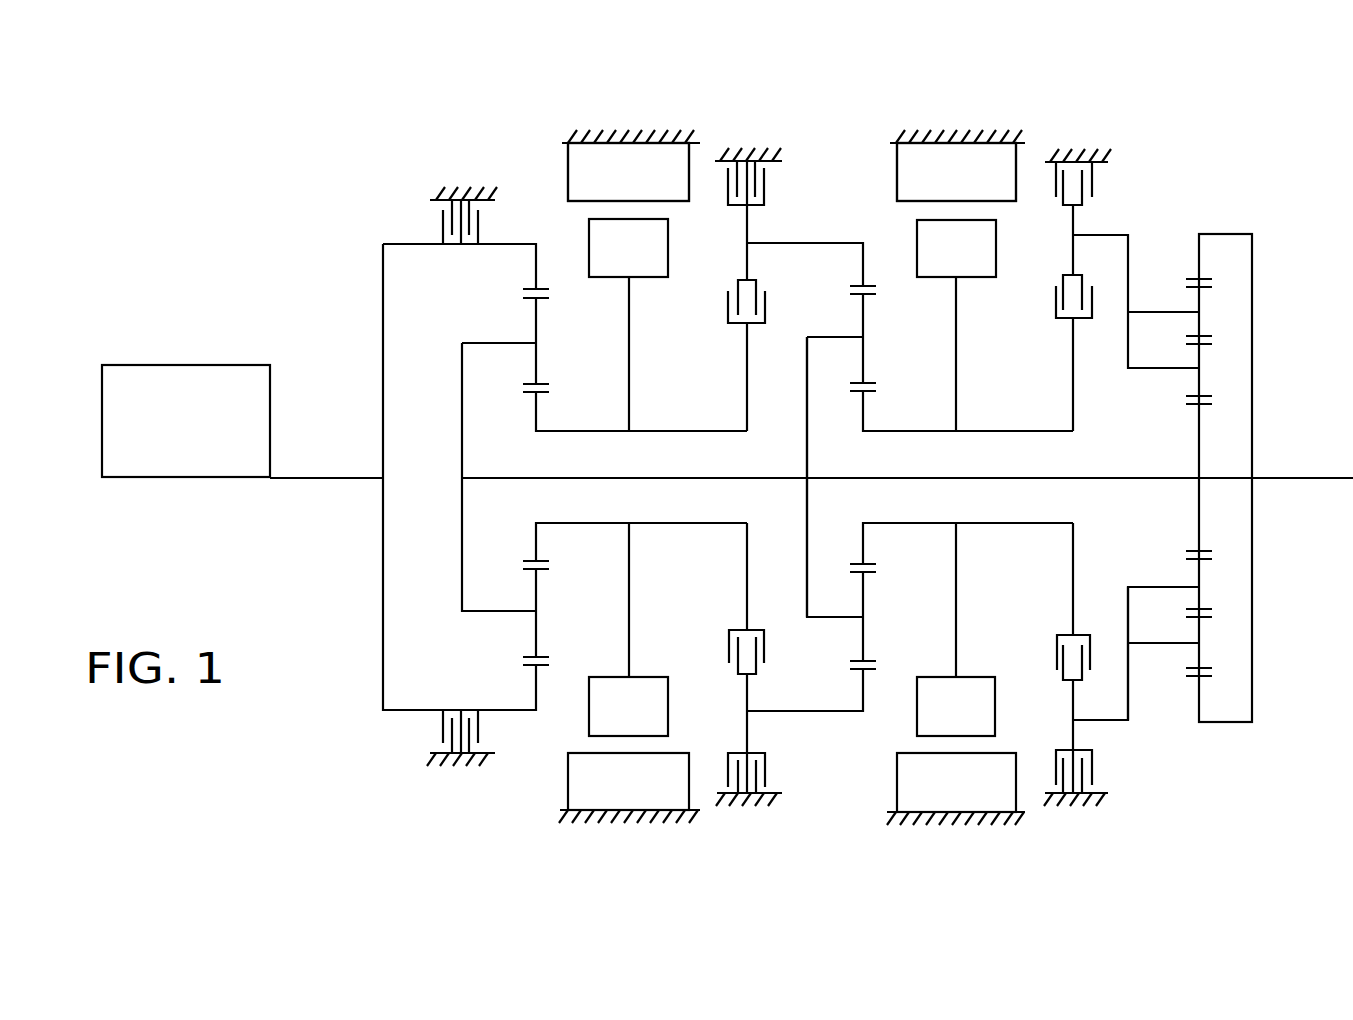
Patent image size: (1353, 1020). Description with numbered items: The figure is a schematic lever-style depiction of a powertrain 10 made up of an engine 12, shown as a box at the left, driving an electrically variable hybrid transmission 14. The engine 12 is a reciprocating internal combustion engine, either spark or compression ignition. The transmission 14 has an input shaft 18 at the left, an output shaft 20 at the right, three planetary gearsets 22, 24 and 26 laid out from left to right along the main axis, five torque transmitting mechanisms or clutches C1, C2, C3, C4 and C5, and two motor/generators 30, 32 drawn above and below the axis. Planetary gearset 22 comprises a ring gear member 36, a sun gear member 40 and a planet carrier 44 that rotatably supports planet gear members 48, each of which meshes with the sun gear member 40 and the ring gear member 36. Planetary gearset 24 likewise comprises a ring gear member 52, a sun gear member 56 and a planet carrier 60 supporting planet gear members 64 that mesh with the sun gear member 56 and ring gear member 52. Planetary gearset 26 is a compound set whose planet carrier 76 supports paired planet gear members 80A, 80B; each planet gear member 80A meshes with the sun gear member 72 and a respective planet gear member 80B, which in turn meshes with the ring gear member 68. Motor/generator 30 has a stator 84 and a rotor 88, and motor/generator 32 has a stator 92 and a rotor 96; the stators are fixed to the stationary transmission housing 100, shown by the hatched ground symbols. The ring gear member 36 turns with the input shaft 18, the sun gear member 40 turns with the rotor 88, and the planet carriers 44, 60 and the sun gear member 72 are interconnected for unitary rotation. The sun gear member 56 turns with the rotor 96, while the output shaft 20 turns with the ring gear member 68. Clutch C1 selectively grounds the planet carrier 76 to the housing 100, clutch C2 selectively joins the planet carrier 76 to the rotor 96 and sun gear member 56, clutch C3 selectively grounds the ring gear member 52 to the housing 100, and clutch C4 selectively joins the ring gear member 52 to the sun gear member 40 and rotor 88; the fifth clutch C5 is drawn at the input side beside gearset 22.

The powertrain 10 is at (178, 228).
The engine 12 is at (193, 365).
The electrically variable hybrid transmission 14 is at (310, 182).
The input shaft 18 is at (345, 477).
The output shaft 20 is at (1312, 477).
The planetary gearset 22 is at (537, 222).
The planetary gearset 24 is at (862, 222).
The planetary gearset 26 is at (1228, 228).
The motor/generator 30 is at (605, 172).
The motor/generator 32 is at (933, 172).
The ring gear member 36 is at (525, 286).
The sun gear member 40 is at (541, 395).
The planet carrier 44 is at (460, 431).
The planet gear members 48 is at (541, 300).
The ring gear member 52 is at (850, 284).
The sun gear member 56 is at (868, 395).
The planet carrier 60 is at (806, 365).
The planet gear members 64 is at (852, 298).
The ring gear member 68 is at (1192, 680).
The sun gear member 72 is at (1192, 550).
The planet carrier 76 is at (1127, 606).
The planet gear members 80A is at (1208, 562).
The planet gear members 80B is at (1208, 621).
The stator 84 is at (640, 172).
The rotor 88 is at (668, 238).
The stator 92 is at (965, 172).
The rotor 96 is at (996, 238).
The transmission housing 100 is at (470, 200).
The clutch C1 is at (1118, 182).
The clutch C2 is at (1035, 316).
The clutch C3 is at (778, 182).
The clutch C4 is at (715, 315).
The clutch C5 is at (420, 222).